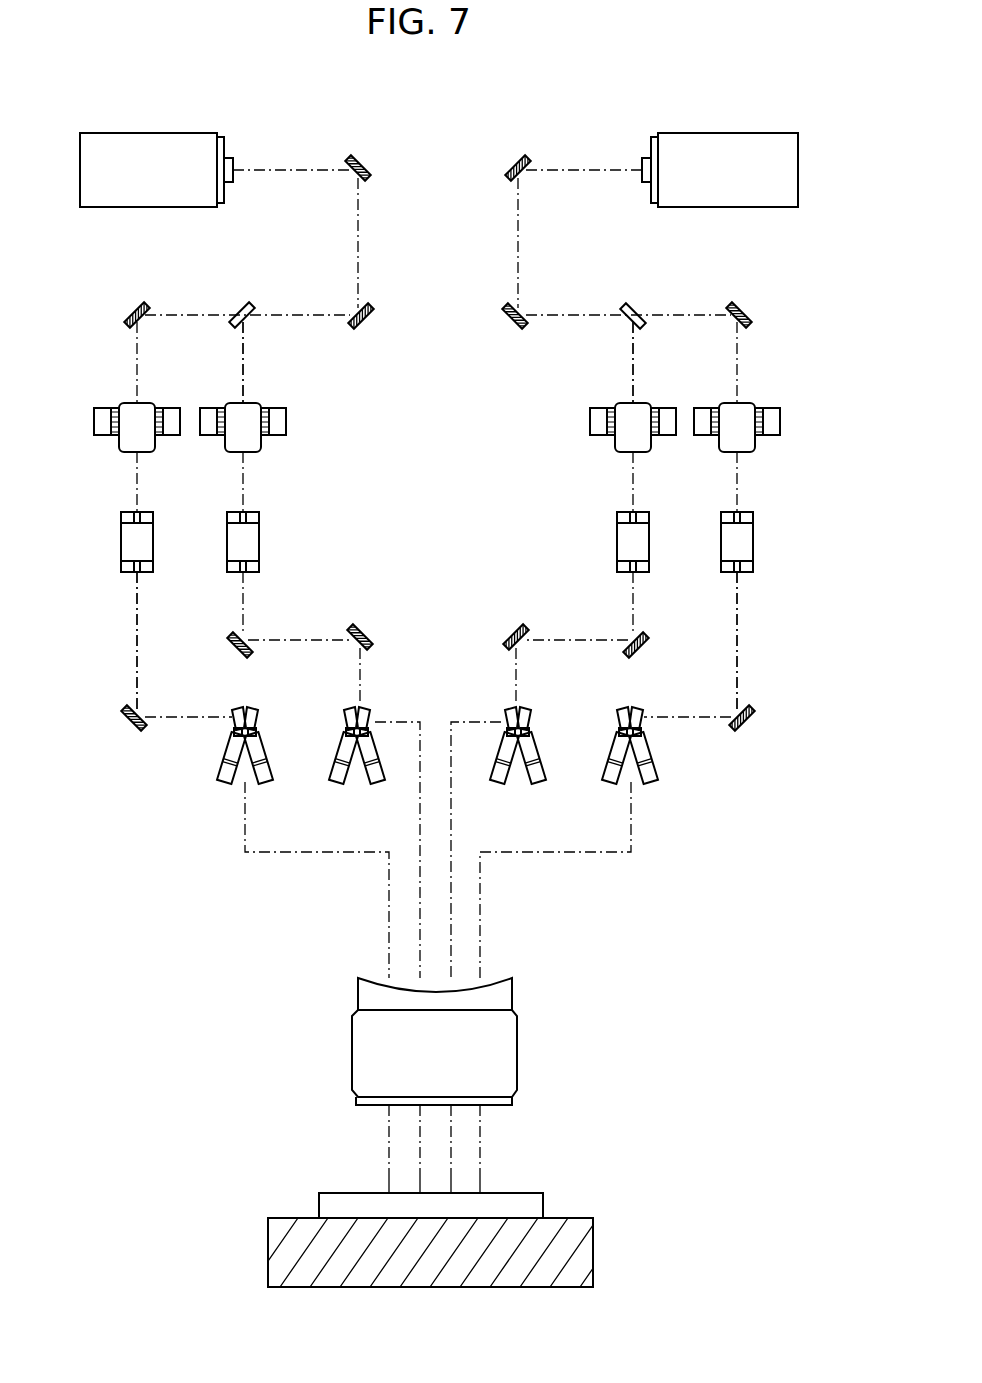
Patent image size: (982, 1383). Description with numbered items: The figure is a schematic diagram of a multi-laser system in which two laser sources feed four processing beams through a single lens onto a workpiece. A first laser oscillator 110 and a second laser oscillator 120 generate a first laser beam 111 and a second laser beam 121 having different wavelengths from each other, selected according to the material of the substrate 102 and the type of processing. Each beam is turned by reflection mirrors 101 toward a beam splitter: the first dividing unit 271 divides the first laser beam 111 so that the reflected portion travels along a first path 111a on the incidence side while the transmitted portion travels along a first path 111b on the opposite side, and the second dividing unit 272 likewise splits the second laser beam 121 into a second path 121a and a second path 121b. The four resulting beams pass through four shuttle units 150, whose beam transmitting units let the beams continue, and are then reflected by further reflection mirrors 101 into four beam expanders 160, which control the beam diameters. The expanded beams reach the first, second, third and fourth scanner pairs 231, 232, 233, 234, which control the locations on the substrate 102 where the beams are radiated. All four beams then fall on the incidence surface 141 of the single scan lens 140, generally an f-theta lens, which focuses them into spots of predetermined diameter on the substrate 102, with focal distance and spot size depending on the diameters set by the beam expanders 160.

The first laser oscillator 110 is at (137, 150).
The second laser oscillator 120 is at (742, 150).
The first laser beam 111 is at (277, 168).
The second laser beam 121 is at (600, 168).
The first path 111a is at (245, 375).
The first path 111b is at (137, 640).
The second path 121a is at (631, 375).
The second path 121b is at (739, 640).
The reflection mirror 101 is at (370, 327).
The first dividing unit 271 is at (243, 306).
The second dividing unit 272 is at (633, 308).
The shuttle unit 150 is at (243, 413).
The beam expander 160 is at (233, 538).
The first scanner pair 231 is at (230, 782).
The second scanner pair 232 is at (343, 782).
The third scanner pair 233 is at (527, 780).
The fourth scanner pair 234 is at (645, 782).
The incidence surface 141 is at (462, 977).
The single scan lens 140 is at (507, 1055).
The substrate 102 is at (533, 1200).